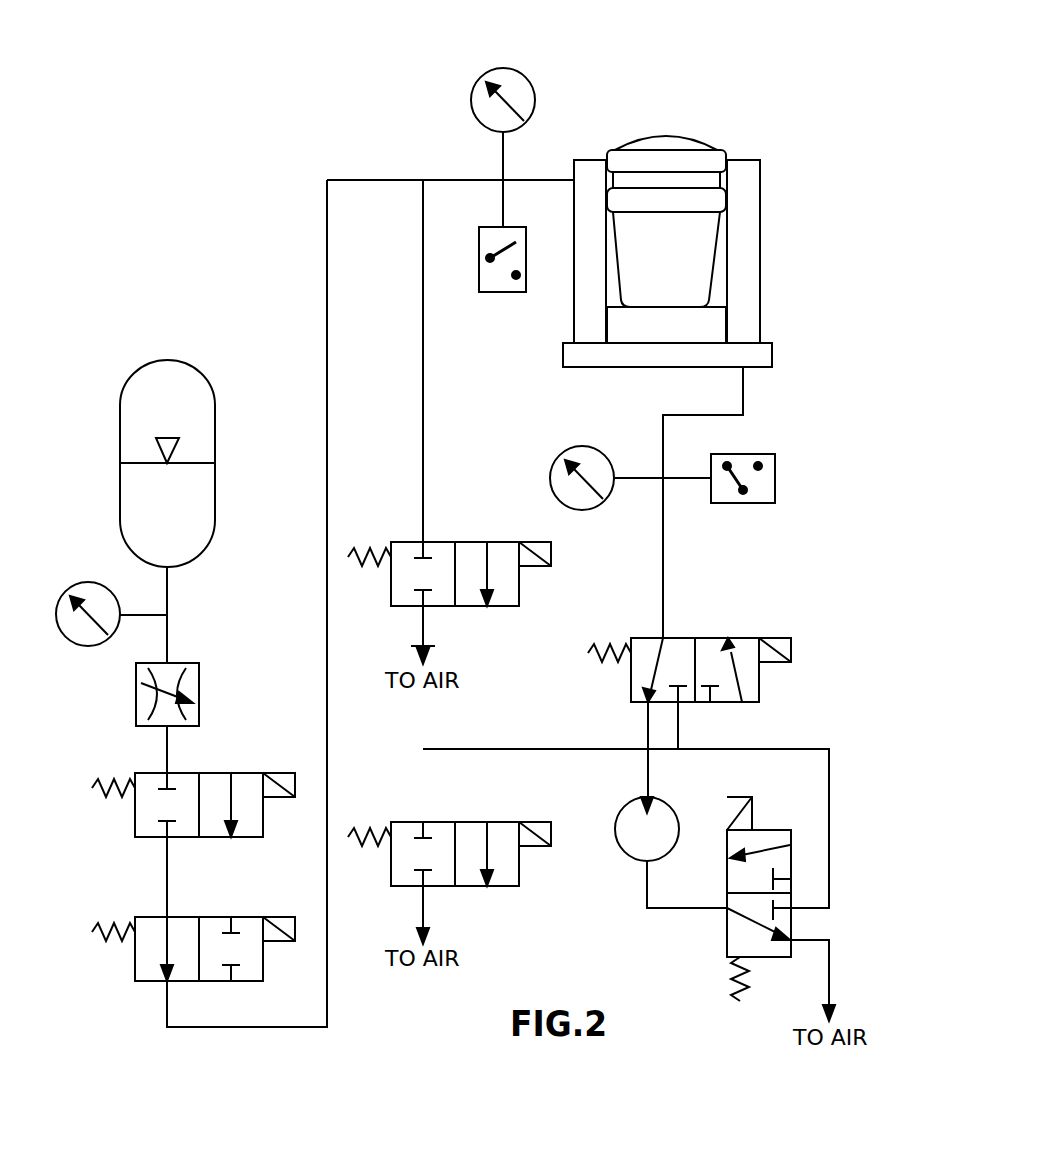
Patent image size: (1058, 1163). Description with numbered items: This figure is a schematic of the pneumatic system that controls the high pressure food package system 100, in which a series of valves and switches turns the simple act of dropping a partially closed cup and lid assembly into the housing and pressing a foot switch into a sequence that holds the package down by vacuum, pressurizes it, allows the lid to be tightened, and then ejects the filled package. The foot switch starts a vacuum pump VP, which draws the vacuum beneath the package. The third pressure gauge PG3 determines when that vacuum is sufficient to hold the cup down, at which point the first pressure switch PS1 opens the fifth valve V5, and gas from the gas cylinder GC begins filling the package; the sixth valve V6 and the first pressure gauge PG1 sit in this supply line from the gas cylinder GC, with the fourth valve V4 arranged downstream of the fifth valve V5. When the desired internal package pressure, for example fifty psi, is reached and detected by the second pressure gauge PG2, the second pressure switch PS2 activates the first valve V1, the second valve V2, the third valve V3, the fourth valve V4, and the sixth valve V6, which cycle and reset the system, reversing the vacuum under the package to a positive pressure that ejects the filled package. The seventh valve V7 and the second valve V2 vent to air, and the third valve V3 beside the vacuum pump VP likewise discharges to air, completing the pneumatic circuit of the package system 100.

The package system 100 is at (743, 160).
The gas cylinder GC is at (168, 360).
The pressure gauge #1 PG1 is at (88, 582).
The pressure gauge #2 PG2 is at (503, 68).
The pressure gauge #3 PG3 is at (582, 447).
The pressure switch #1 PS1 is at (775, 478).
The pressure switch #2 PS2 is at (503, 292).
The valve #1 V1 is at (708, 638).
The valve #2 V2 is at (468, 822).
The valve #3 V3 is at (727, 940).
The valve #4 V4 is at (250, 917).
The valve #5 V5 is at (250, 773).
The valve #6 V6 is at (136, 693).
The valve #7 V7 is at (468, 542).
The vacuum pump VP is at (680, 820).